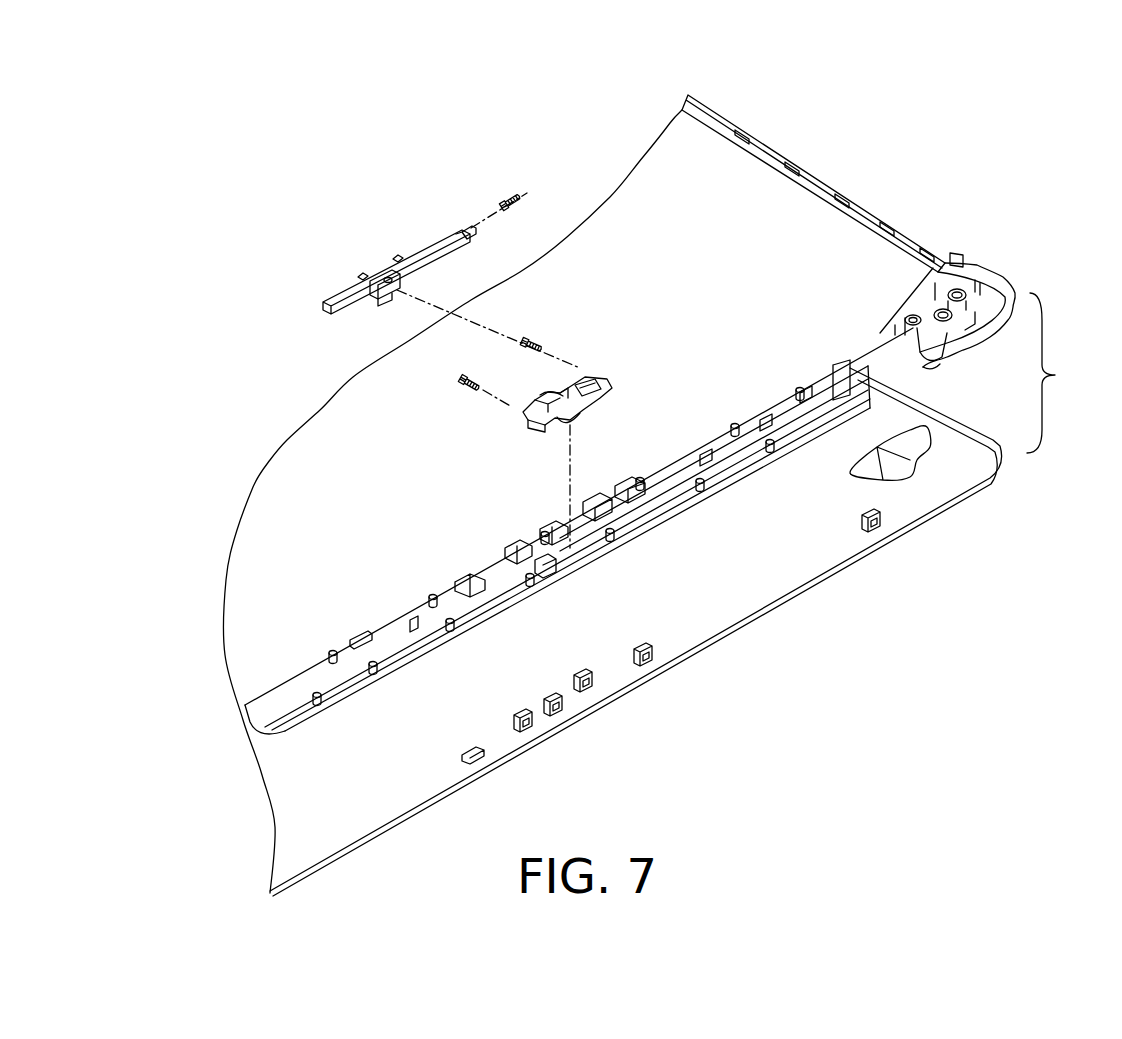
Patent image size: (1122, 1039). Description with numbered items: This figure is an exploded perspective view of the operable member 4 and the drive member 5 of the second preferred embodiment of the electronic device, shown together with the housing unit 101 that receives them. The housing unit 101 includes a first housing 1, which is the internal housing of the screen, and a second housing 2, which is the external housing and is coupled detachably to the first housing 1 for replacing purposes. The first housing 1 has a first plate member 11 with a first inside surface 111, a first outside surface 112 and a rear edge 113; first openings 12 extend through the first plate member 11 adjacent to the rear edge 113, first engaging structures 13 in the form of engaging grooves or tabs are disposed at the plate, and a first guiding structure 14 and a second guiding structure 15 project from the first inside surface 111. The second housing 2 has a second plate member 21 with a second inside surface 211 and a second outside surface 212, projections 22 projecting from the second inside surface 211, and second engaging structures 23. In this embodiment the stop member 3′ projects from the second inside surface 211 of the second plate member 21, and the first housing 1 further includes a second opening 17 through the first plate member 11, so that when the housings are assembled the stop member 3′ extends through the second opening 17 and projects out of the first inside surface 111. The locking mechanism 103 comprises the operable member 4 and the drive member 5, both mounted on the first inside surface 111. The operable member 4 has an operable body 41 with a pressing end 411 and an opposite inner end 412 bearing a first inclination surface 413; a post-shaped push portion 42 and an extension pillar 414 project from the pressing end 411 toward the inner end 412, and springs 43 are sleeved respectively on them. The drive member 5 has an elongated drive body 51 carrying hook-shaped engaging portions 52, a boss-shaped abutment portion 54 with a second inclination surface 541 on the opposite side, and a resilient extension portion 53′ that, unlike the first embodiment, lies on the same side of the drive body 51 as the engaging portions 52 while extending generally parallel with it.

The first housing 1 is at (619, 494).
The first plate member 11 is at (826, 183).
The first inside surface 111 is at (790, 210).
The first outside surface 112 is at (902, 354).
The rear edge 113 is at (663, 518).
The housing unit 101 is at (1068, 373).
The locking mechanism 103 is at (666, 277).
The first openings 12 is at (550, 527).
The first engaging structures 13 is at (466, 578).
The first guiding structure 14 is at (543, 568).
The second guiding structure 15 is at (621, 489).
The second opening 17 is at (593, 503).
The second housing 2 is at (646, 632).
The second plate member 21 is at (951, 442).
The second inside surface 211 is at (795, 567).
The second outside surface 212 is at (750, 620).
The projections 22 is at (557, 704).
The second engaging structures 23 is at (452, 753).
The stop member 3′ is at (590, 681).
The operable member 4 is at (544, 415).
The operable body 41 is at (606, 398).
The pressing end 411 is at (577, 416).
The inner end 412 is at (540, 400).
The first inclination surface 413 is at (560, 390).
The extension pillar 414 is at (530, 420).
The push portion 42 is at (598, 380).
The springs 43 is at (541, 340).
The drive member 5 is at (428, 256).
The drive body 51 is at (465, 242).
The engaging portions 52 is at (390, 254).
The extension portion 53′ is at (412, 250).
The abutment portion 54 is at (395, 290).
The second inclination surface 541 is at (380, 297).